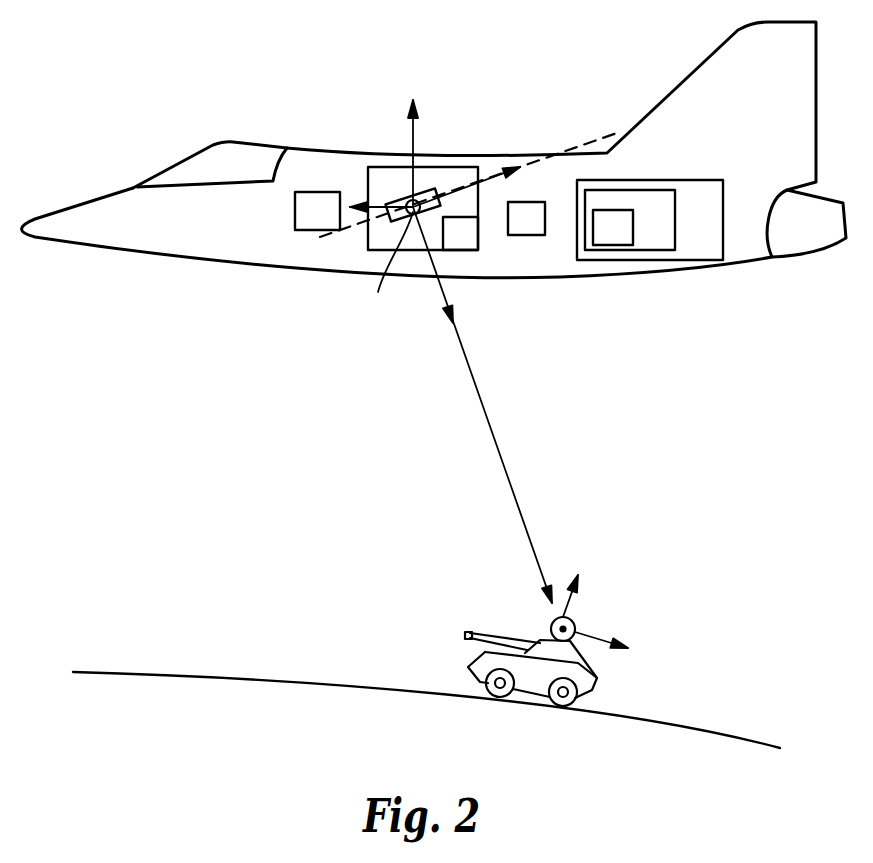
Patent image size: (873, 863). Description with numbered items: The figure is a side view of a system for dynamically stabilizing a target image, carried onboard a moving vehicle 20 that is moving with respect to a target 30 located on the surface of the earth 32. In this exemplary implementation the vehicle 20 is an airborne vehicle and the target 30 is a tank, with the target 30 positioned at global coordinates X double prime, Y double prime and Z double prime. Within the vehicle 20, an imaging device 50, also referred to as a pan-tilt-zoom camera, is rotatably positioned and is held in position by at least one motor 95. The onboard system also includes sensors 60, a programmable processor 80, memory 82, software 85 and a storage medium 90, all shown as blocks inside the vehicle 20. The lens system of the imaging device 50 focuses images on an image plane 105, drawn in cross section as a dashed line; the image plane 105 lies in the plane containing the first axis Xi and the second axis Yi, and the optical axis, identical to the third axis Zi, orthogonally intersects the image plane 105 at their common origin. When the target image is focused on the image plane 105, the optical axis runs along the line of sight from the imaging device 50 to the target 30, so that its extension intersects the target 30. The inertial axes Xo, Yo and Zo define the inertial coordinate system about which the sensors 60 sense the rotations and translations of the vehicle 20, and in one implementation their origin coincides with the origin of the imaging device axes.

The vehicle 20 is at (97, 247).
The target 30 is at (596, 681).
The surface of the earth 32 is at (723, 730).
The imaging device 50 is at (428, 192).
The sensors 60 is at (541, 230).
The programmable processor 80 is at (332, 224).
The memory 82 is at (628, 242).
The software 85 is at (668, 242).
The storage medium 90 is at (715, 242).
The motor 95 is at (475, 246).
The image plane 105 is at (573, 152).